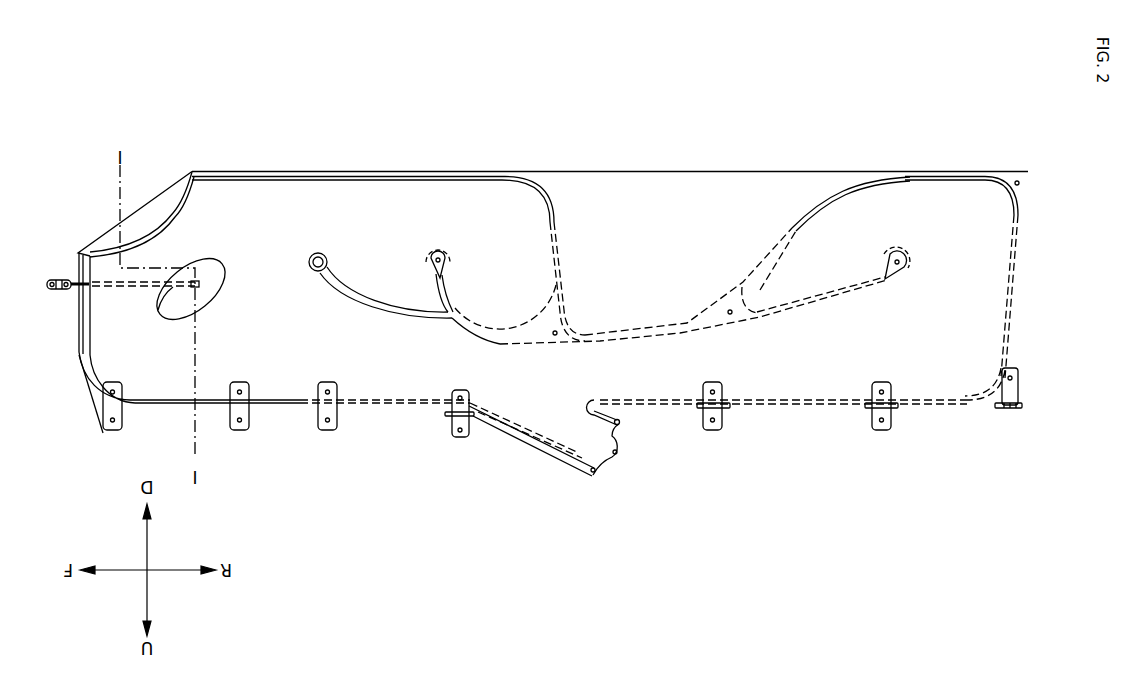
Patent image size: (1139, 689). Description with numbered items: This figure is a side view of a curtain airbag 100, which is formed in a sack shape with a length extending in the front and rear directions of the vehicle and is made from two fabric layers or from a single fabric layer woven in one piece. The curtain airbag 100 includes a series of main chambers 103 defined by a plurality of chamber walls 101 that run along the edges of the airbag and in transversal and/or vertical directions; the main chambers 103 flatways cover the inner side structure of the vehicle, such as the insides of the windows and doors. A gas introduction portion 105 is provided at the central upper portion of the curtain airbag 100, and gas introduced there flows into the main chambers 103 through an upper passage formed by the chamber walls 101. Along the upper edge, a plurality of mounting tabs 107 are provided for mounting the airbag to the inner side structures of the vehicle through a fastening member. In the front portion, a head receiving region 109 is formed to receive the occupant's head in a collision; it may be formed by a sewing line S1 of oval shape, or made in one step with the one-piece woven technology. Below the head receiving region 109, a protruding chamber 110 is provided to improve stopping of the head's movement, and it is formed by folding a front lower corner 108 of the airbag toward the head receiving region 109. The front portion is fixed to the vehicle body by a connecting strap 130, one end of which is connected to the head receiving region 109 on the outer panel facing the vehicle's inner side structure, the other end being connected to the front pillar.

The curtain airbag 100 is at (414, 474).
The chamber walls 101 is at (378, 297).
The main chambers 103 is at (295, 367).
The gas introduction portion 105 is at (563, 463).
The mounting tabs 107 is at (697, 420).
The front lower corner 108 is at (173, 223).
The head receiving region 109 is at (190, 268).
The protruding chamber 110 is at (152, 218).
The connecting strap 130 is at (122, 285).
The sewing line S1 is at (215, 260).